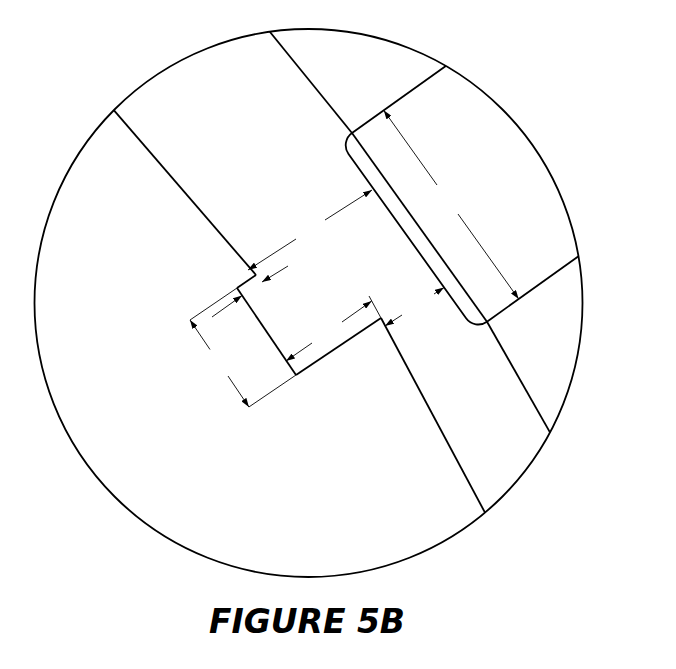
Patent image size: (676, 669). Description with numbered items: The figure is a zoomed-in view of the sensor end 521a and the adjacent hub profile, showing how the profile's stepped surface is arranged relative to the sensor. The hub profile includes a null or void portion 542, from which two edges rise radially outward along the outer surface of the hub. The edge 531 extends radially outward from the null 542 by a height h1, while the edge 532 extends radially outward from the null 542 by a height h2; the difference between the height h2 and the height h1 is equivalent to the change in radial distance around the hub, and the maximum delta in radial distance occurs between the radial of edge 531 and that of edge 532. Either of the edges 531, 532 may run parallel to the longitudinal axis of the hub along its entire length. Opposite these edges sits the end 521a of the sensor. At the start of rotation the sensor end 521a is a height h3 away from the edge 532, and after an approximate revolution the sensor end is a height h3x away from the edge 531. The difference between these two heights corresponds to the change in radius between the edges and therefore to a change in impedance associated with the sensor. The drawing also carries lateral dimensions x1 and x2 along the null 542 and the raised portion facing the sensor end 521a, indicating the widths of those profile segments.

The edge 532 is at (245, 281).
The null or void portion 542 is at (270, 331).
The edge 531 is at (381, 324).
The sensor end 521a is at (533, 291).
The height h1 is at (260, 287).
The height h2 is at (329, 331).
The height h3 is at (310, 230).
The height h3x is at (414, 307).
The width x1 is at (243, 347).
The width x2 is at (451, 204).